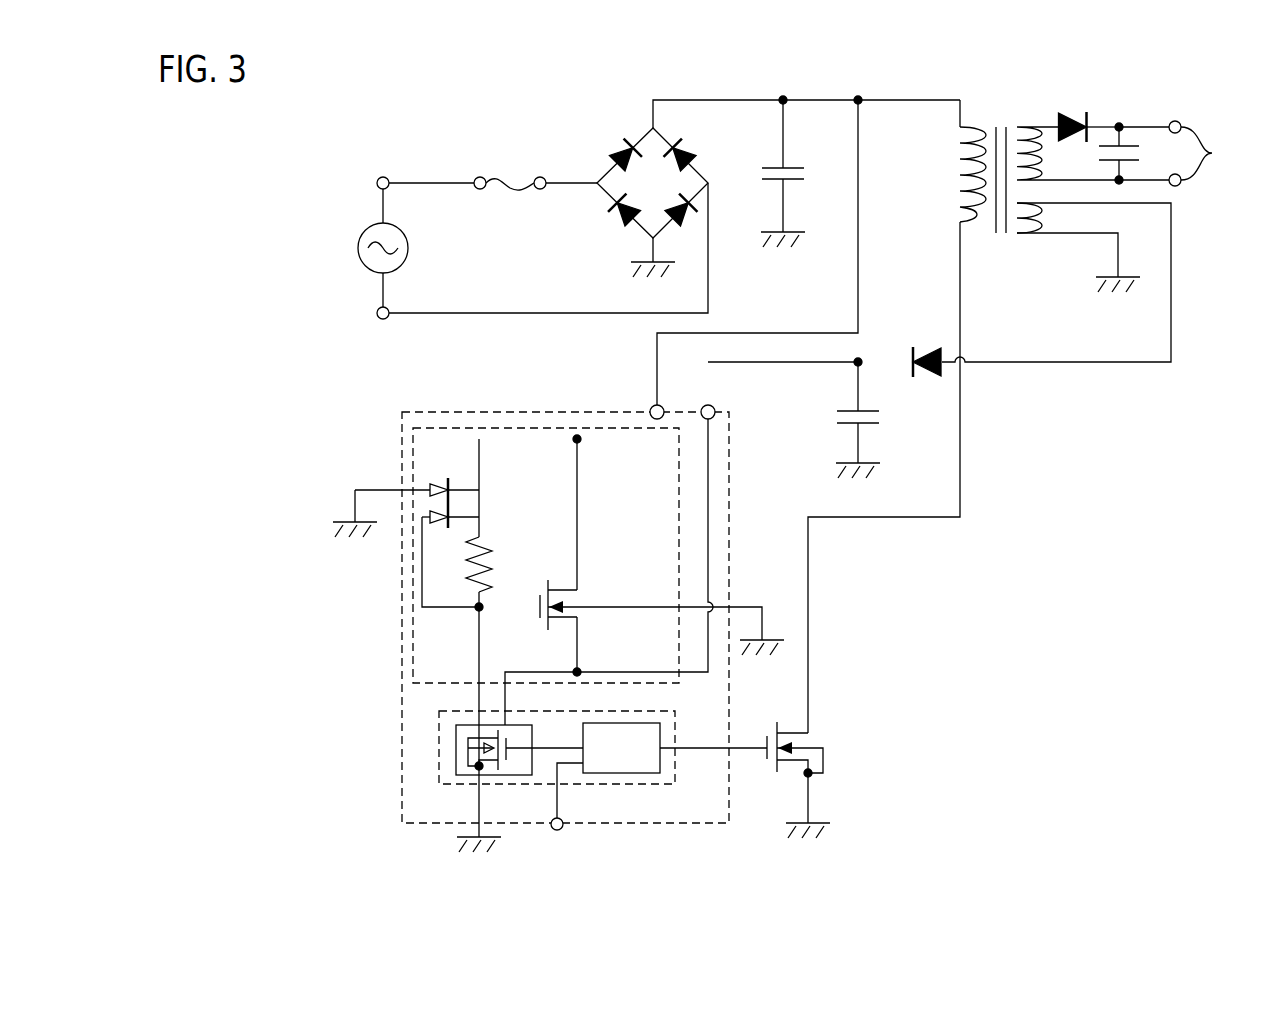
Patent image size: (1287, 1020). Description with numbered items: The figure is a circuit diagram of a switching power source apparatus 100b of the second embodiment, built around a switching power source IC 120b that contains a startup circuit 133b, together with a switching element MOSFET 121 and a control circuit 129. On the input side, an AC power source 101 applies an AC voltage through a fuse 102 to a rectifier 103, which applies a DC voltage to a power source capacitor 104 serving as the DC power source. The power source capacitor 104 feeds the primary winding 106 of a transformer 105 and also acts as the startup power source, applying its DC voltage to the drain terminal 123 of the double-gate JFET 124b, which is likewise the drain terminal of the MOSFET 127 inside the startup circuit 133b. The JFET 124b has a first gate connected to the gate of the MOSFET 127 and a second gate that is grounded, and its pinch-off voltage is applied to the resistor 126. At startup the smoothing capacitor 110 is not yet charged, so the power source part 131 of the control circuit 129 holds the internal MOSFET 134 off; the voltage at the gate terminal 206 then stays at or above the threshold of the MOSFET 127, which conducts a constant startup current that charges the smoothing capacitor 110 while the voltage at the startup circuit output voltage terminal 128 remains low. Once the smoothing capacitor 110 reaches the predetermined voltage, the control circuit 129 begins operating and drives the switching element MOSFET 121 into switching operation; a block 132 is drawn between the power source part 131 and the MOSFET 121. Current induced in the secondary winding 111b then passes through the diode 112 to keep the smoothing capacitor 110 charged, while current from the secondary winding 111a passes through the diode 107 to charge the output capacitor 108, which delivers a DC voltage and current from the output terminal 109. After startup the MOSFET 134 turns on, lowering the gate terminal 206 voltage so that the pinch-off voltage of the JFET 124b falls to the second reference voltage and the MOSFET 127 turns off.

The switching power source apparatus 100b is at (398, 111).
The AC power source 101 is at (408, 249).
The fuse 102 is at (499, 175).
The rectifier 103 is at (616, 148).
The power source capacitor 104 is at (788, 165).
The transformer 105 is at (989, 123).
The primary winding 106 is at (958, 190).
The diode 107 is at (1076, 116).
The output capacitor 108 is at (1132, 145).
The output terminal 109 is at (1212, 153).
The smoothing capacitor 110 is at (873, 424).
The secondary winding 111a is at (1026, 124).
The secondary winding 111b is at (1030, 240).
The diode 112 is at (927, 356).
The switching power source IC 120b is at (402, 782).
The switching element MOSFET 121 is at (800, 742).
The drain terminal 123 is at (651, 406).
The double-gate JFET 124b is at (442, 485).
The resistor 126 is at (488, 550).
The MOSFET 127 is at (562, 601).
The startup circuit output voltage terminal 128 is at (715, 412).
The control circuit 129 is at (439, 722).
The power source part 131 is at (533, 736).
The driving circuit 132 is at (660, 731).
The startup circuit 133b is at (468, 426).
The internal MOSFET 134 is at (500, 765).
The gate terminal 206 is at (481, 612).